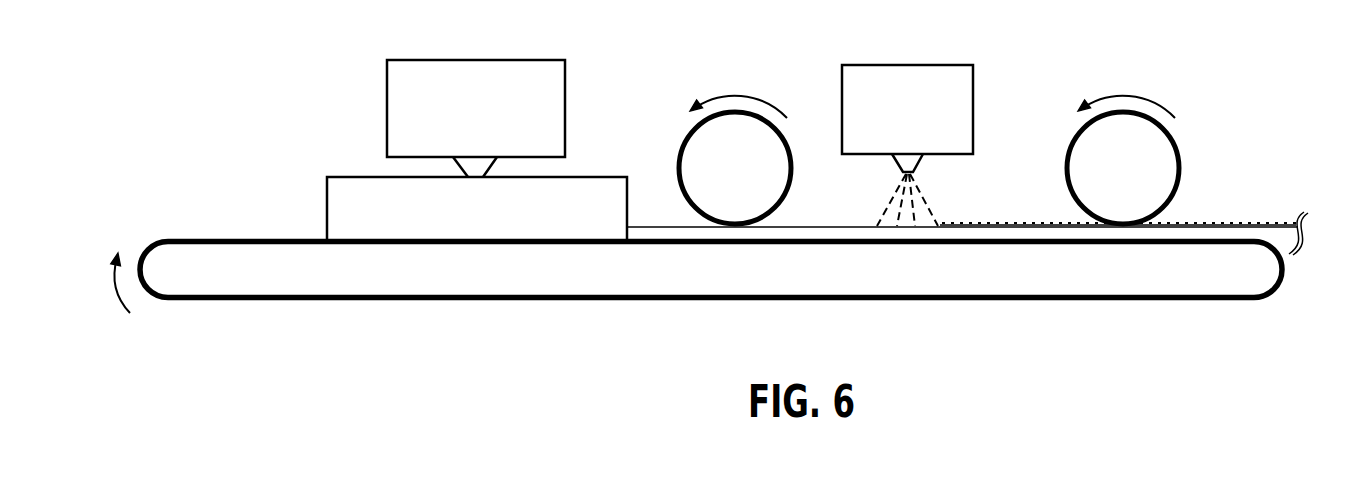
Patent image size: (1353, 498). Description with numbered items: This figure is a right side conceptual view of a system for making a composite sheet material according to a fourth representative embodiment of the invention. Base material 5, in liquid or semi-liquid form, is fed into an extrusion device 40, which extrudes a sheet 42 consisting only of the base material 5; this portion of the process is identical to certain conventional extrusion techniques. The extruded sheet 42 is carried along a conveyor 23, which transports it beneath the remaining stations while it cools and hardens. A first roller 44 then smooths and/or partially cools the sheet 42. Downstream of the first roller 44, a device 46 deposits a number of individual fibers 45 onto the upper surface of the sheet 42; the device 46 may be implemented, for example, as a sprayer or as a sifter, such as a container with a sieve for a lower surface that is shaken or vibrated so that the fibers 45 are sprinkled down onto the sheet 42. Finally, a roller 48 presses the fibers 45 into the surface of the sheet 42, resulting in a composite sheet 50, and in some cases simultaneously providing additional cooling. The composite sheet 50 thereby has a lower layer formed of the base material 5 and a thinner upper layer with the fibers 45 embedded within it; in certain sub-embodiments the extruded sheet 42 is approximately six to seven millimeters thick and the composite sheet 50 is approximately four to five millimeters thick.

The base material 5 is at (387, 107).
The conveyor 23 is at (967, 270).
The extrusion device 40 is at (327, 210).
The sheet 42 is at (663, 233).
The first roller 44 is at (678, 168).
The fibers 45 is at (913, 205).
The device 46 is at (898, 65).
The roller 48 is at (1183, 167).
The composite sheet 50 is at (1265, 225).